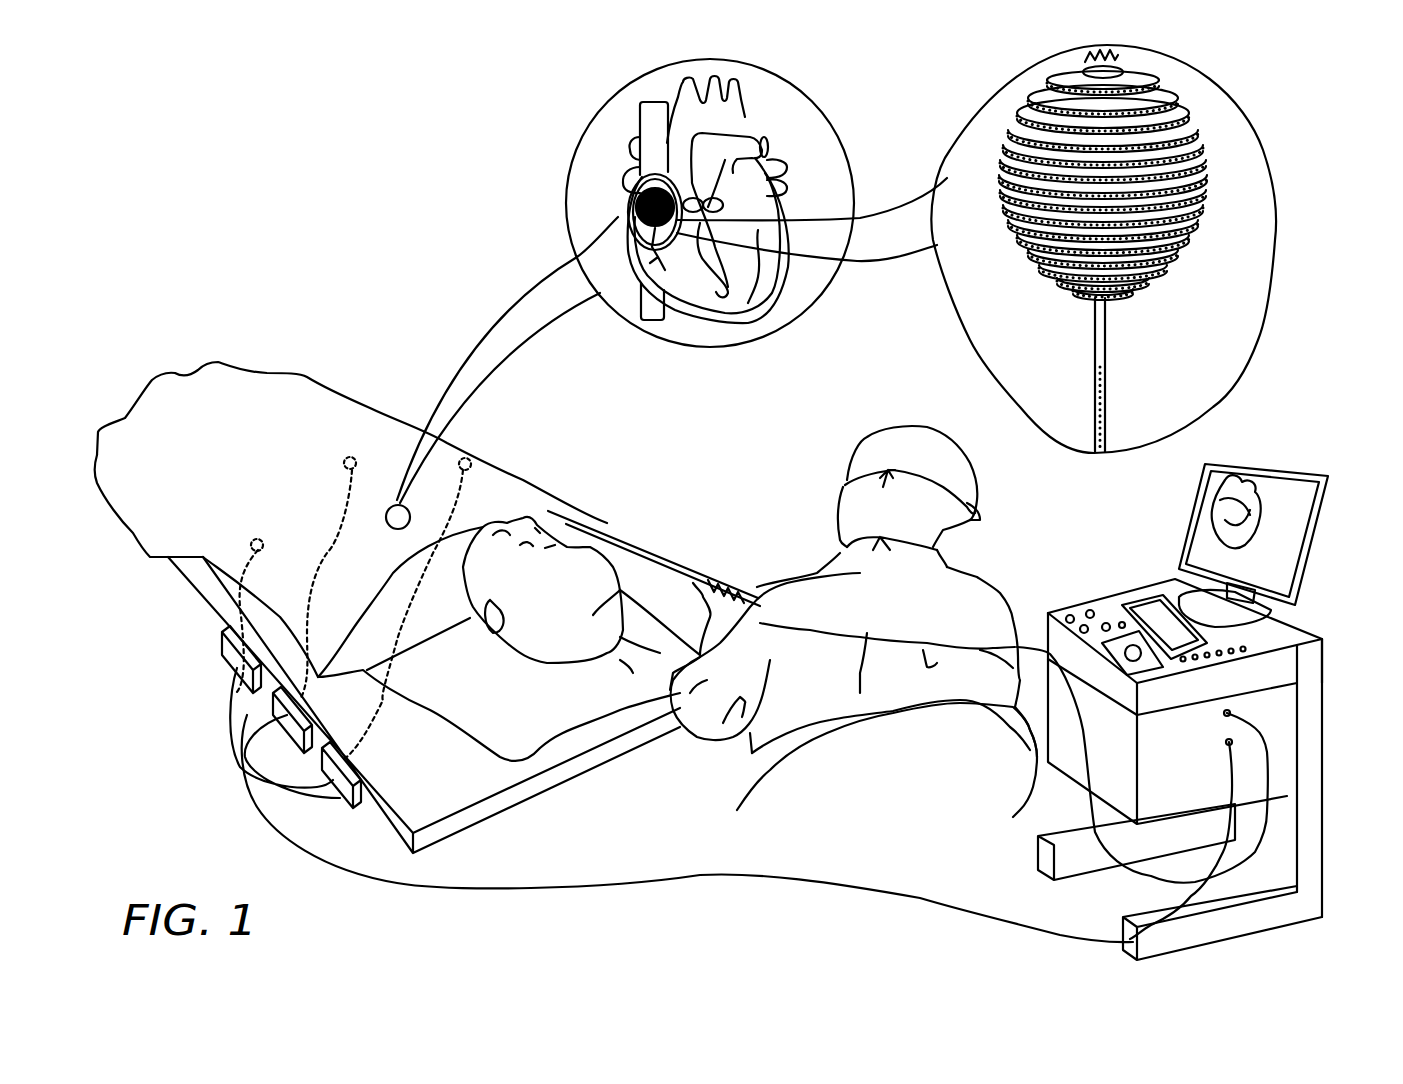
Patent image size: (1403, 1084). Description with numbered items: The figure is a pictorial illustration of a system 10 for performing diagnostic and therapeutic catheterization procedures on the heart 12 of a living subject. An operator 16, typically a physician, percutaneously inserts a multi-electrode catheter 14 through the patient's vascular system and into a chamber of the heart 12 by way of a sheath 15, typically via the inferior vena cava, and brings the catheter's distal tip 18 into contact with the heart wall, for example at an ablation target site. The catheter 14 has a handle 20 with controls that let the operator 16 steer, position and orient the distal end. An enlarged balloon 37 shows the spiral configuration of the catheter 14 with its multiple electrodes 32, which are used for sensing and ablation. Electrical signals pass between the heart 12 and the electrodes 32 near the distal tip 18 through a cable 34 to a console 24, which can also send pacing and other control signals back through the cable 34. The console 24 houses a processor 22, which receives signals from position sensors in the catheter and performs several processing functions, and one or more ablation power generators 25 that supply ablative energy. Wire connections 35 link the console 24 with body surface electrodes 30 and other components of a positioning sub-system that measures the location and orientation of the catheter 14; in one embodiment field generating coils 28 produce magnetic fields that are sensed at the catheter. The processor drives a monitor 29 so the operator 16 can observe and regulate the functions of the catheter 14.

The system 10 is at (308, 190).
The heart 12 is at (752, 305).
The multi-electrode catheter 14 is at (572, 260).
The sheath 15 is at (1105, 397).
The operator 16 is at (782, 571).
The distal tip 18 is at (1120, 63).
The handle 20 is at (728, 587).
The processor 22 is at (1291, 777).
The console 24 is at (1220, 712).
The ablation power generators 25 is at (1287, 665).
The field generating coils 28 is at (340, 798).
The monitor 29 is at (1323, 495).
The body surface electrodes 30 is at (352, 462).
The electrodes 32 is at (1208, 228).
The cable 34 is at (1029, 647).
The wire connections 35 is at (243, 582).
The balloon 37 is at (1141, 249).